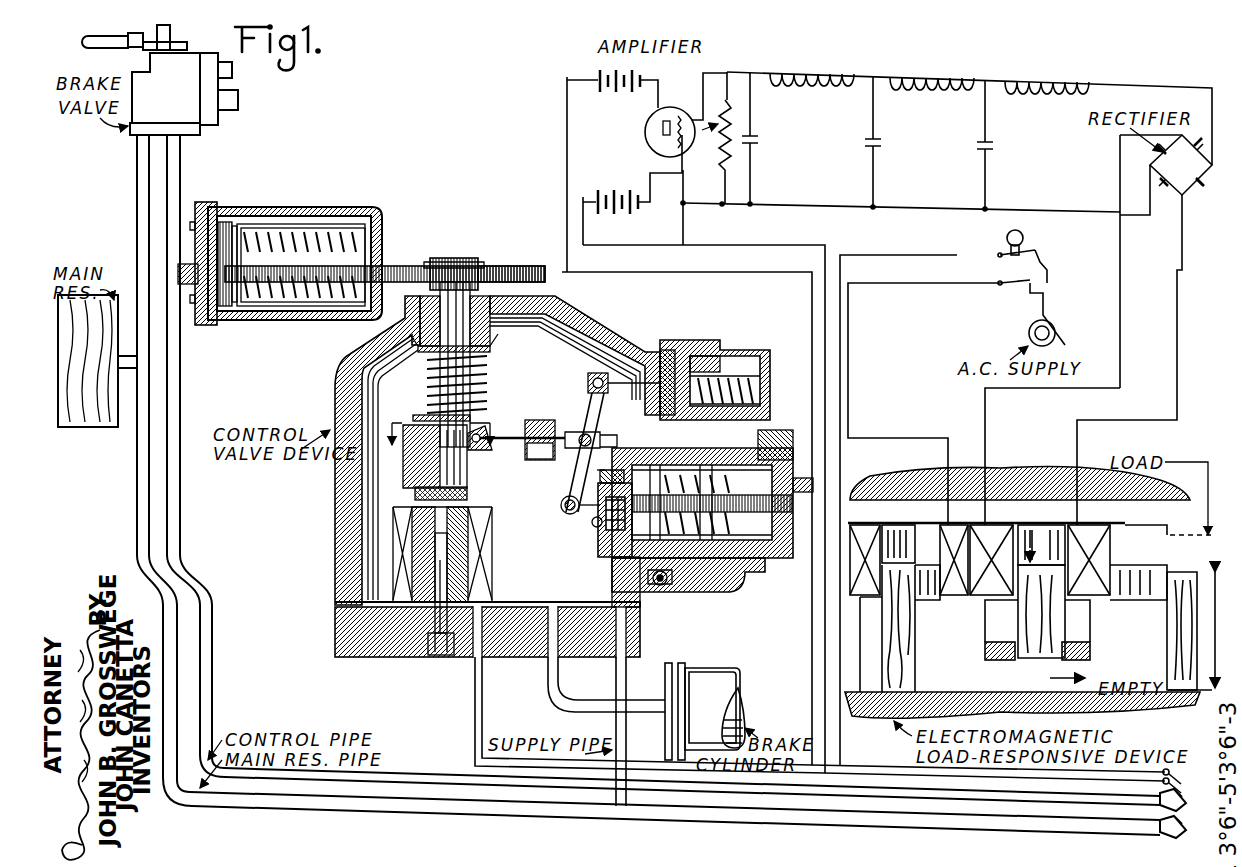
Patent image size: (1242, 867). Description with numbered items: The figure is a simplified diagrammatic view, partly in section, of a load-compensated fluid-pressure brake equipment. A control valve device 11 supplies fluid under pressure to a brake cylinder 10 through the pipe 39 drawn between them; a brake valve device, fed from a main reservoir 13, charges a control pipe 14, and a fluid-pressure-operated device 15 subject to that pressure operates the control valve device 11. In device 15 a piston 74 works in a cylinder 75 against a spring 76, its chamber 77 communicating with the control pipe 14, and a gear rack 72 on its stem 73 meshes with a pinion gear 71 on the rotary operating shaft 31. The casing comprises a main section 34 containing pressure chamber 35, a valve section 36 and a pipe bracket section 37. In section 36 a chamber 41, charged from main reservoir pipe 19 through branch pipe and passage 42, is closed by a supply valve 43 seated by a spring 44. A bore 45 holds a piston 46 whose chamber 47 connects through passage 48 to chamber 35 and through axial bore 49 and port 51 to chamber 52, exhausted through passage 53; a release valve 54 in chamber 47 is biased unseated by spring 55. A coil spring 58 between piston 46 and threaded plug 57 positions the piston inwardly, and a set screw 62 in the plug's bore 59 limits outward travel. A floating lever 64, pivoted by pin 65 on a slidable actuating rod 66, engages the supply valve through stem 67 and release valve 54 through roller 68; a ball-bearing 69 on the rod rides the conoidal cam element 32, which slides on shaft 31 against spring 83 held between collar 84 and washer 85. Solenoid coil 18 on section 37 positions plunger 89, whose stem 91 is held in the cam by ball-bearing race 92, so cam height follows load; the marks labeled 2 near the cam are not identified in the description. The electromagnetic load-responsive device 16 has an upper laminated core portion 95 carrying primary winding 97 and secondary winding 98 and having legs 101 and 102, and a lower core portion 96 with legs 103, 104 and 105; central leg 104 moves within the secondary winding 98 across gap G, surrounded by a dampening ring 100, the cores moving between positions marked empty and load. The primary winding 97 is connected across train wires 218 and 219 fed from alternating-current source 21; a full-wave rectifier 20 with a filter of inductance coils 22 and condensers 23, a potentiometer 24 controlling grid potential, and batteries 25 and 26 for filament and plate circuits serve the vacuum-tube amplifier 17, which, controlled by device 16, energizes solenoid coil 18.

The link rod 2 is at (445, 454).
The brake cylinder 10 is at (682, 666).
The control valve device 11 is at (340, 488).
The main reservoir 13 is at (60, 424).
The control pipe 14 is at (204, 650).
The fluid-pressure-operated device 15 is at (361, 271).
The electromagnetic load-responsive device 16 is at (1042, 462).
The amplifier 17 is at (690, 100).
The solenoid coil 18 is at (470, 560).
The main reservoir pipe 19 is at (223, 802).
The full-wave rectifier 20 is at (1182, 198).
The source of alternating current supply 21 is at (1026, 333).
The inductance coils 22 is at (790, 74).
The condensers 23 is at (756, 140).
The potentiometer 24 is at (722, 158).
The battery 25 is at (620, 190).
The battery 26 is at (602, 92).
The operating shaft 31 is at (438, 303).
The conoidal cam element 32 is at (403, 480).
The main casing section 34 is at (590, 348).
The pressure chamber 35 is at (660, 353).
The valve casing section 36 is at (698, 367).
The pipe bracket casing section 37 is at (340, 628).
The pipe 39 is at (556, 690).
The chamber 41 is at (700, 363).
The branch pipe and passage 42 is at (627, 676).
The supply valve 43 is at (705, 358).
The spring 44 is at (770, 380).
The bore 45 is at (736, 570).
The piston 46 is at (608, 468).
The chamber 47 is at (580, 538).
The passage 48 is at (586, 478).
The axial bore 49 is at (612, 575).
The port 51 is at (652, 584).
The chamber 52 is at (723, 517).
The exhaust port and passage 53 is at (668, 582).
The release valve 54 is at (592, 522).
The spring 55 is at (605, 530).
The threaded plug 57 is at (765, 570).
The coil spring 58 is at (762, 450).
The axial bore 59 is at (743, 465).
The set screw 62 is at (800, 488).
The floating lever 64 is at (590, 430).
The pin 65 is at (600, 430).
The actuating rod 66 is at (541, 441).
The rod or stem 67 is at (650, 382).
The roller 68 is at (560, 507).
The ball-bearing 69 is at (478, 452).
The pinion gear 71 is at (446, 261).
The gear rack 72 is at (516, 266).
The stem 73 is at (318, 266).
The piston 74 is at (226, 222).
The cylinder 75 is at (302, 322).
The spring 76 is at (360, 232).
The chamber 77 is at (212, 322).
The spring 83 is at (487, 385).
The collar 84 is at (490, 350).
The washer 85 is at (470, 418).
The plunger 89 is at (440, 640).
The stem 91 is at (447, 570).
The ball-bearing race 92 is at (467, 494).
The upper laminated magnetic core portion 95 is at (1150, 520).
The lower laminated magnetic core portion 96 is at (898, 676).
The primary winding 97 is at (866, 596).
The secondary winding 98 is at (982, 596).
The dampening ring 100 is at (1076, 632).
The leg portion 101 is at (938, 625).
The leg portion 102 is at (1135, 600).
The leg portion 103 is at (890, 640).
The central leg 104 is at (1007, 632).
The leg portion 105 is at (1170, 640).
The train wire 218 is at (957, 251).
The train wire 219 is at (948, 285).